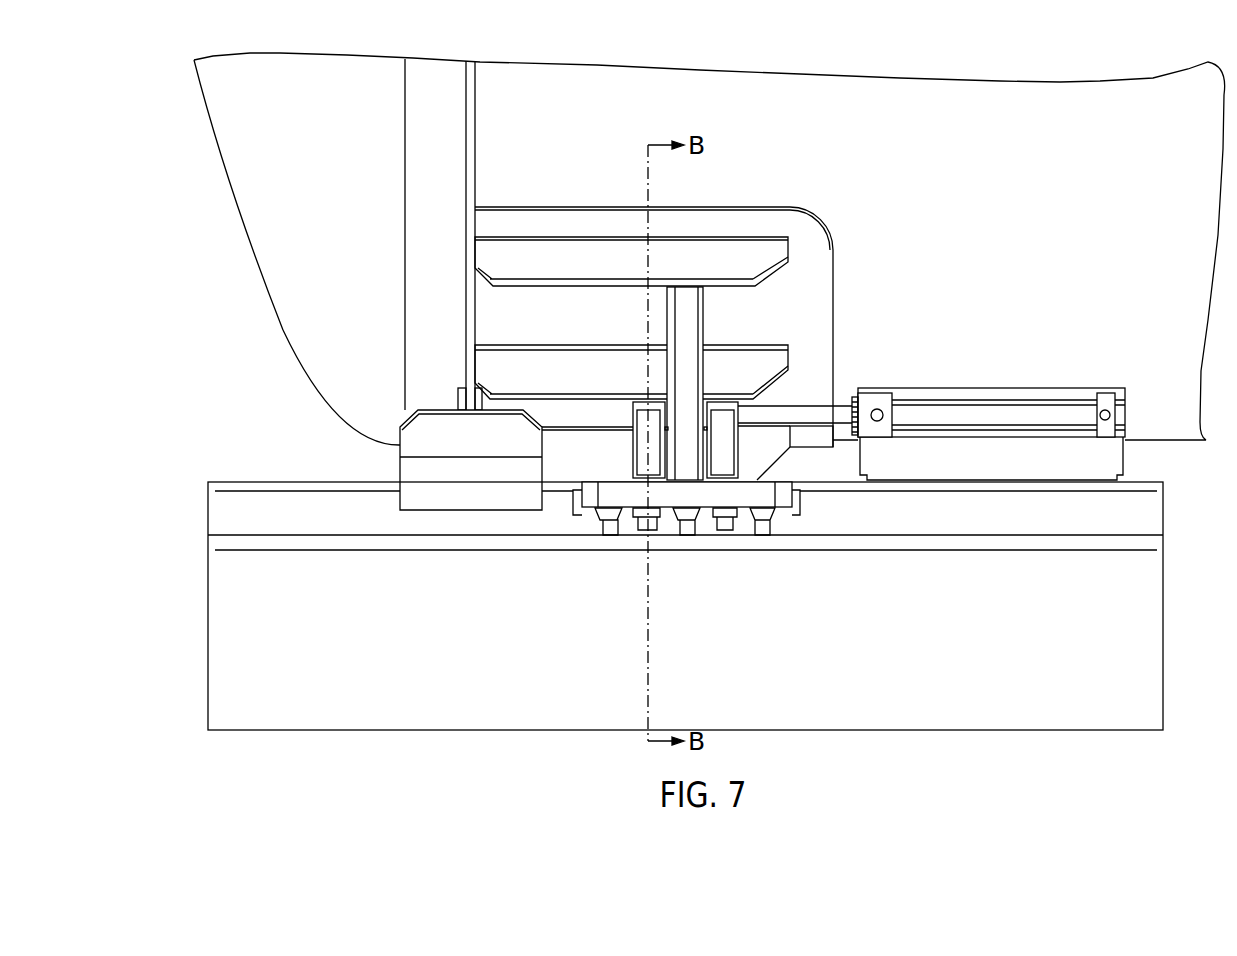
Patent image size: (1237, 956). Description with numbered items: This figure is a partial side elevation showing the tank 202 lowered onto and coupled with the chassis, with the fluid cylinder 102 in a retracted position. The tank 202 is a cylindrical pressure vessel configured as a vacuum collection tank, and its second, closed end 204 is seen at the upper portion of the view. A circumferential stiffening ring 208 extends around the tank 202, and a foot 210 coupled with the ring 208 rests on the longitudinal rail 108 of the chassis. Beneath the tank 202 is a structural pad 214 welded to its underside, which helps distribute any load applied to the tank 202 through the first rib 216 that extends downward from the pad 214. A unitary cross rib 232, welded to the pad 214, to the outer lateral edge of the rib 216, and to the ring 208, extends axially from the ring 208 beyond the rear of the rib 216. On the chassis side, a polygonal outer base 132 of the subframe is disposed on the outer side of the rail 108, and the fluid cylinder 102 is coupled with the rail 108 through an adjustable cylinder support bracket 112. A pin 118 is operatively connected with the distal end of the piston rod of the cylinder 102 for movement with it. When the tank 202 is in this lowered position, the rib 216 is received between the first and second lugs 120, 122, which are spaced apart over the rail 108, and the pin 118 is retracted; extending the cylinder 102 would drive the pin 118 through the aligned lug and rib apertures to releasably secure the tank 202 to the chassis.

The fluid cylinder 102 is at (1110, 417).
The longitudinal rail 108 is at (1163, 607).
The adjustable cylinder support bracket 112 is at (1125, 467).
The pin 118 is at (803, 412).
The first lug 120 is at (730, 447).
The second lug 122 is at (638, 458).
The polygonal outer base 132 is at (615, 497).
The tank 202 is at (285, 333).
The closed end 204 is at (232, 145).
The circumferential stiffening ring 208 is at (466, 158).
The foot 210 is at (411, 474).
The structural pad 214 is at (813, 239).
The first rib 216 is at (688, 328).
The cross rib 232 is at (500, 248).